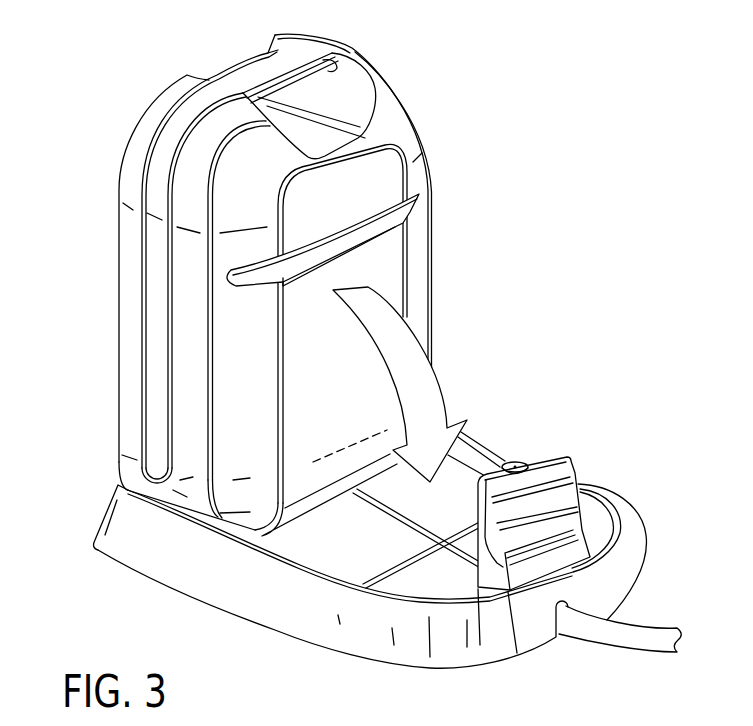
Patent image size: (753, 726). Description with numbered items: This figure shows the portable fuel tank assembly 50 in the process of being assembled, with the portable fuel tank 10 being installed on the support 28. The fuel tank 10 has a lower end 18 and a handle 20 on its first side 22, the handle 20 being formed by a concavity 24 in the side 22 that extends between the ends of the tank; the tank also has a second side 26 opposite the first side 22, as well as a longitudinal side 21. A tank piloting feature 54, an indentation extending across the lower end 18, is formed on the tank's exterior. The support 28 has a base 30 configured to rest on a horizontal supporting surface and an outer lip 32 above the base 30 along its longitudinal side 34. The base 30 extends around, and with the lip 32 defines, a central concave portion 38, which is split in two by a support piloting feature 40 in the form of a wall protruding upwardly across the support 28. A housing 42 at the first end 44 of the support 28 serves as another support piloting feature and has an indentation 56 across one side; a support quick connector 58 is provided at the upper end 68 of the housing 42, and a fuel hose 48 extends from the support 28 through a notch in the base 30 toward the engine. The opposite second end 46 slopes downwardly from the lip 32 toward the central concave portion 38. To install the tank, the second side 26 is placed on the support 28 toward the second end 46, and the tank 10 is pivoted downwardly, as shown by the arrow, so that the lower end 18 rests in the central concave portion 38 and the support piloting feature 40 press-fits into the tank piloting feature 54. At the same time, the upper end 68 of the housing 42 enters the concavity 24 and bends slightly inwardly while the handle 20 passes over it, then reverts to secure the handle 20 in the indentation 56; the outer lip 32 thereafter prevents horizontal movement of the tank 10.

The portable fuel tank 10 is at (133, 308).
The lower end 18 is at (345, 391).
The handle 20 is at (255, 75).
The longitudinal side 21 is at (143, 351).
The first side 22 is at (166, 84).
The concavity 24 is at (345, 112).
The second side 26 is at (285, 521).
The support 28 is at (170, 557).
The base 30 is at (460, 670).
The outer lip 32 is at (467, 447).
The longitudinal side 34 is at (227, 570).
The central concave portion 38 is at (337, 547).
The support piloting feature 40 is at (442, 555).
The housing 42 is at (579, 487).
The first end 44 is at (628, 580).
The second end 46 is at (101, 514).
The fuel hose 48 is at (637, 642).
The portable fuel tank assembly 50 is at (362, 497).
The tank piloting feature 54 is at (393, 225).
The indentation 56 is at (553, 547).
The support quick connector 58 is at (515, 460).
The upper end 68 is at (543, 463).